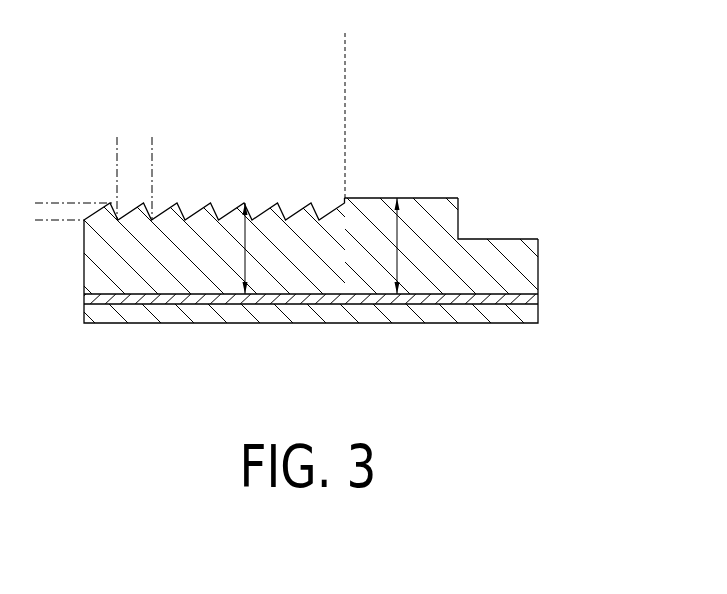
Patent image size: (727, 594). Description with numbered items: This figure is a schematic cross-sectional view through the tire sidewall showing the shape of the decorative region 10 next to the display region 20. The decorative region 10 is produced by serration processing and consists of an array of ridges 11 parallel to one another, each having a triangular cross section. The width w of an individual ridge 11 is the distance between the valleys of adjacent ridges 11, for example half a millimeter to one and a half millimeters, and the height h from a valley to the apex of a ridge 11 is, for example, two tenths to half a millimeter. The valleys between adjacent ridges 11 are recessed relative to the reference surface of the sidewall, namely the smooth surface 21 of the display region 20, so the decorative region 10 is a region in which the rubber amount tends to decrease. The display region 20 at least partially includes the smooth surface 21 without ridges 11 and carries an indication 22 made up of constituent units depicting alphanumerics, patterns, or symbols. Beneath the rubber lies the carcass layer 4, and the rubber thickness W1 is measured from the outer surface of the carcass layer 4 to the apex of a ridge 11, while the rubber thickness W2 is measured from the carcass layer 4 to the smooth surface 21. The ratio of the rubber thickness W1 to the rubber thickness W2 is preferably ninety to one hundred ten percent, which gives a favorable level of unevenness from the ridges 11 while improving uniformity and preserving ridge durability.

The decorative region 10 is at (345, 62).
The display region 20 is at (560, 62).
The ridges 11 is at (210, 207).
The smooth surface 21 is at (418, 197).
The indication 22 is at (498, 239).
The carcass layer 4 is at (539, 298).
The rubber thickness to the apex of the ridge W1 is at (245, 250).
The rubber thickness at the smooth surface W2 is at (397, 250).
The width of the individual ridges w is at (198, 147).
The height of the ridge h is at (43, 162).